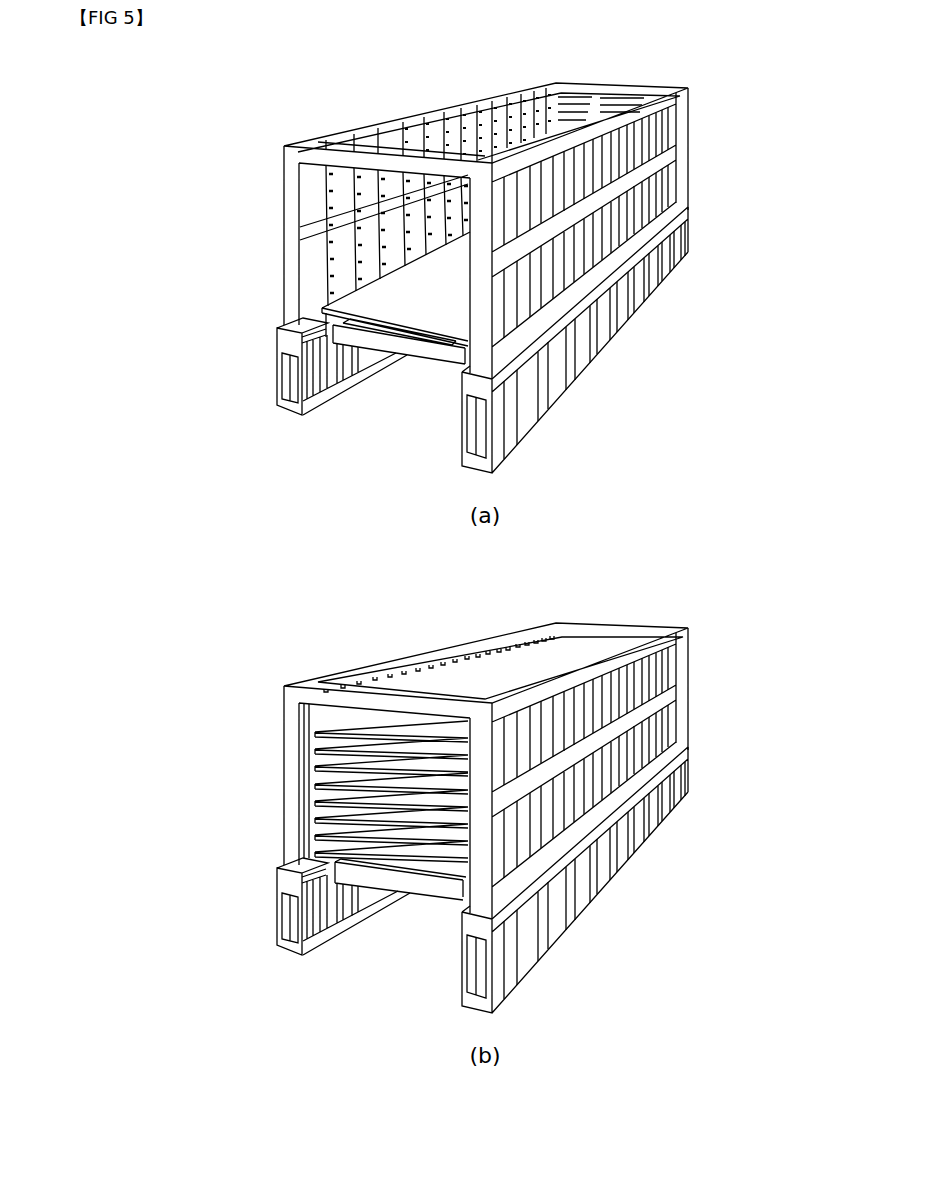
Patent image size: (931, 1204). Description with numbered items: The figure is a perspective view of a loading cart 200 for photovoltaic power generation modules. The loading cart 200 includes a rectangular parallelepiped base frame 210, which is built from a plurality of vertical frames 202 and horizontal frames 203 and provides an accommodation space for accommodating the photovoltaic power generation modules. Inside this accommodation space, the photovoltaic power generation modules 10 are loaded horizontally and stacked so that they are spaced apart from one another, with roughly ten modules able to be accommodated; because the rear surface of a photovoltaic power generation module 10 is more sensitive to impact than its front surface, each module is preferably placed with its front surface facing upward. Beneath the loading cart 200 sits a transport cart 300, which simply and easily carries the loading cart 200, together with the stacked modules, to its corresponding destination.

The photovoltaic power generation module 10 is at (350, 301).
The loading cart 200 is at (278, 243).
The vertical frame 202 is at (324, 187).
The horizontal frame 203 is at (657, 177).
The base frame 210 is at (392, 163).
The transport cart 300 is at (455, 436).